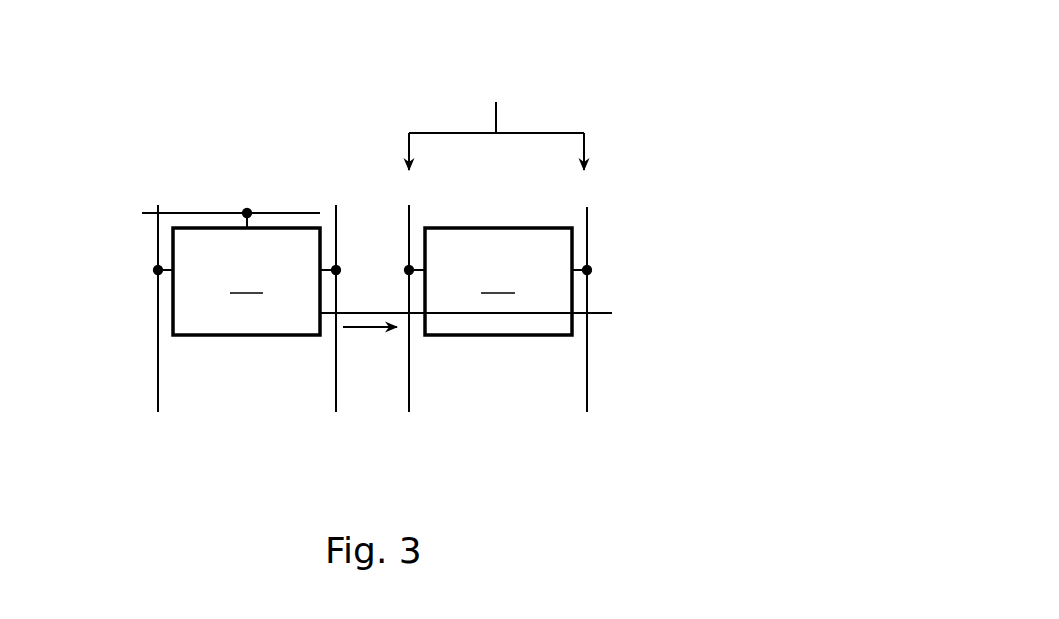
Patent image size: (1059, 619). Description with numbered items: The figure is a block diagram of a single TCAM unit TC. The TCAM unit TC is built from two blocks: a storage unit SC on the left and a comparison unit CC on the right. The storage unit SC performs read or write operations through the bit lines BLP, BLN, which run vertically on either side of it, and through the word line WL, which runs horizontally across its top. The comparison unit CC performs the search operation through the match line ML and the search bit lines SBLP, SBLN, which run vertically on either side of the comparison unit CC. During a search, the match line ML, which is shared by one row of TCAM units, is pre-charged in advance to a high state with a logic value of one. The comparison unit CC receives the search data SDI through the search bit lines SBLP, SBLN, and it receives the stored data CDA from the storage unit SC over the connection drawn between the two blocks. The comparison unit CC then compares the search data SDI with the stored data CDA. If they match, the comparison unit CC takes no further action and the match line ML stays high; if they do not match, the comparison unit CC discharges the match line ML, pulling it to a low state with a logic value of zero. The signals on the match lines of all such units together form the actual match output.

The TCAM unit TC is at (742, 56).
The word line WL is at (140, 207).
The bit line BLP is at (155, 419).
The bit line BLN is at (339, 419).
The storage unit SC is at (246, 281).
The comparison unit CC is at (498, 281).
The match line ML is at (615, 318).
The stored data CDA is at (370, 344).
The search bit line SBLP is at (407, 193).
The search bit line SBLN is at (597, 195).
The search data SDI is at (496, 121).